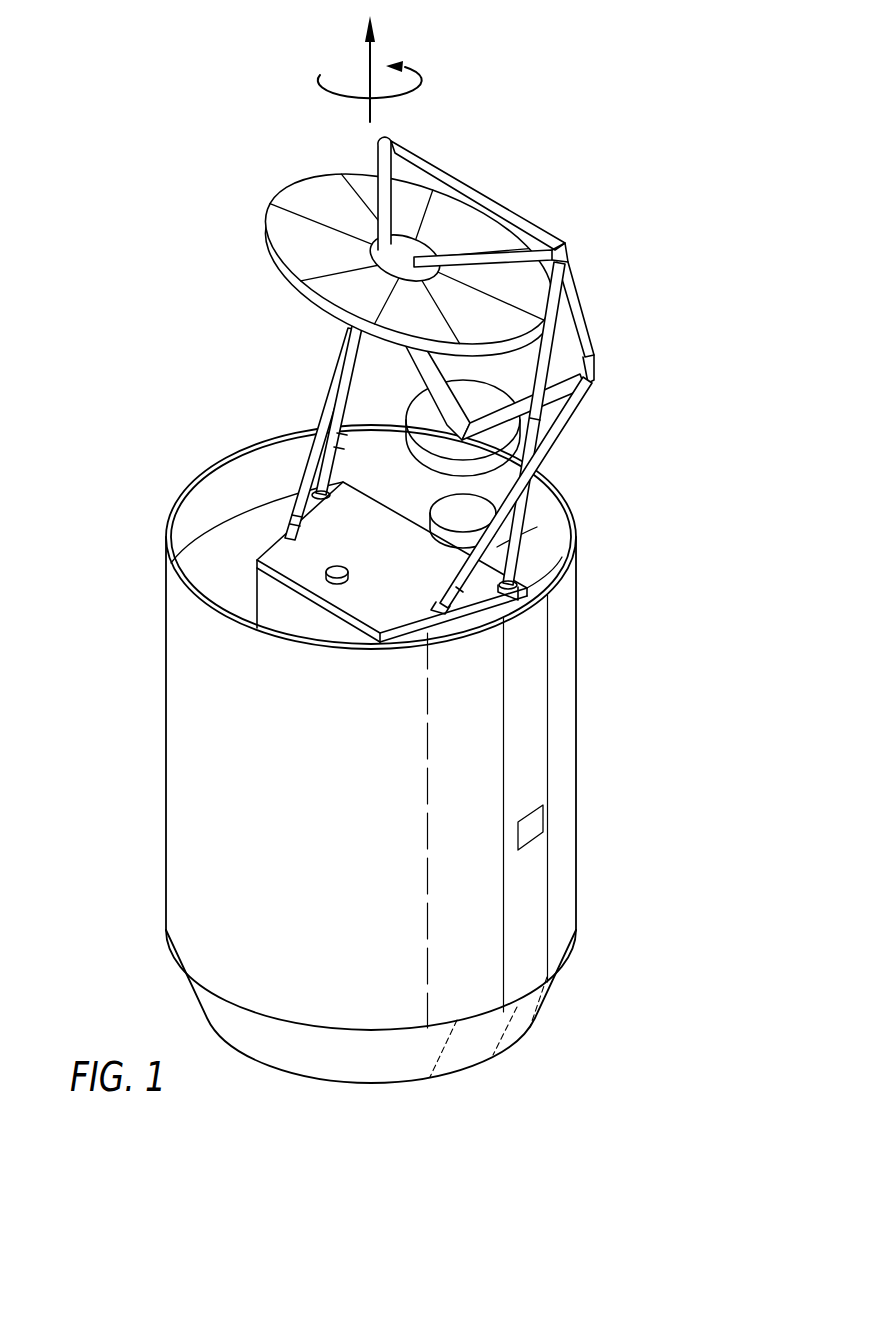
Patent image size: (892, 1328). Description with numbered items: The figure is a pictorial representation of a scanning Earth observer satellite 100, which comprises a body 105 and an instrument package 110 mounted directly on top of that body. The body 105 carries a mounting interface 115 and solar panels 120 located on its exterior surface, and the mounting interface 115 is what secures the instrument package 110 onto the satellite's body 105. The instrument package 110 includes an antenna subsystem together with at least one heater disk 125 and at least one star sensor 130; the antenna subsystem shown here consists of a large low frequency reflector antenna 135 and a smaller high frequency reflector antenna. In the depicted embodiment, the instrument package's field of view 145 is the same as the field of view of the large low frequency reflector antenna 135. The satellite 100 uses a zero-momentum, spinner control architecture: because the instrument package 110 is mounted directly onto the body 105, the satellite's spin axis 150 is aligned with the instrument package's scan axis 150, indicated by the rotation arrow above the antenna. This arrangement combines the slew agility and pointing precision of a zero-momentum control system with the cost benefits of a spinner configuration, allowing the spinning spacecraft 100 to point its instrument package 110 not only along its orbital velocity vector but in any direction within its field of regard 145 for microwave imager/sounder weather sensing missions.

The scanning Earth observer satellite 100 is at (380, 577).
The body 105 is at (380, 754).
The instrument package 110 is at (460, 370).
The mounting interface 115 is at (322, 490).
The solar panels 120 is at (585, 733).
The heater disk 125 is at (466, 513).
The star sensor 130 is at (330, 571).
The large low frequency reflector antenna 135 is at (264, 222).
The field of view 145 is at (140, 725).
The spin axis 150 is at (430, 48).